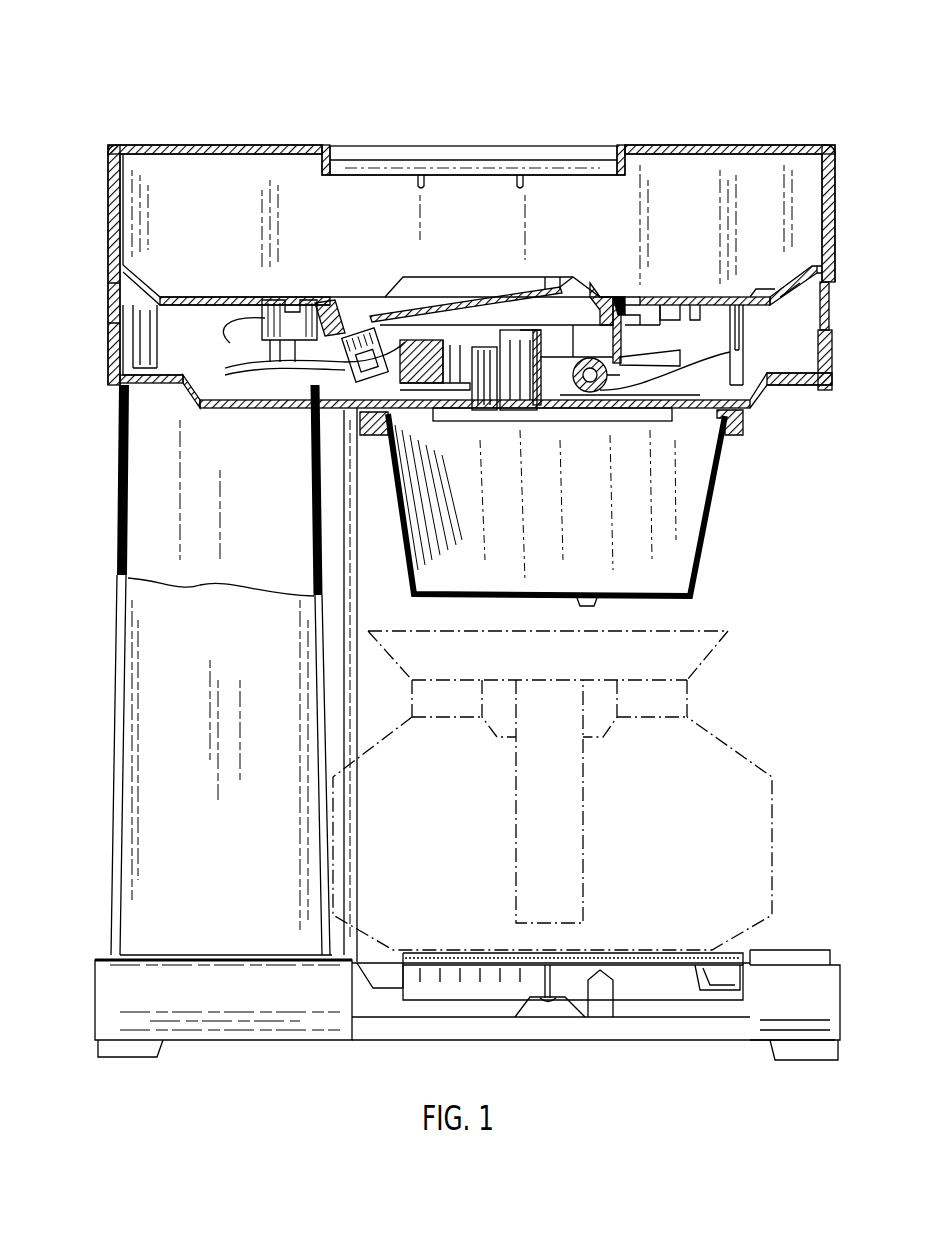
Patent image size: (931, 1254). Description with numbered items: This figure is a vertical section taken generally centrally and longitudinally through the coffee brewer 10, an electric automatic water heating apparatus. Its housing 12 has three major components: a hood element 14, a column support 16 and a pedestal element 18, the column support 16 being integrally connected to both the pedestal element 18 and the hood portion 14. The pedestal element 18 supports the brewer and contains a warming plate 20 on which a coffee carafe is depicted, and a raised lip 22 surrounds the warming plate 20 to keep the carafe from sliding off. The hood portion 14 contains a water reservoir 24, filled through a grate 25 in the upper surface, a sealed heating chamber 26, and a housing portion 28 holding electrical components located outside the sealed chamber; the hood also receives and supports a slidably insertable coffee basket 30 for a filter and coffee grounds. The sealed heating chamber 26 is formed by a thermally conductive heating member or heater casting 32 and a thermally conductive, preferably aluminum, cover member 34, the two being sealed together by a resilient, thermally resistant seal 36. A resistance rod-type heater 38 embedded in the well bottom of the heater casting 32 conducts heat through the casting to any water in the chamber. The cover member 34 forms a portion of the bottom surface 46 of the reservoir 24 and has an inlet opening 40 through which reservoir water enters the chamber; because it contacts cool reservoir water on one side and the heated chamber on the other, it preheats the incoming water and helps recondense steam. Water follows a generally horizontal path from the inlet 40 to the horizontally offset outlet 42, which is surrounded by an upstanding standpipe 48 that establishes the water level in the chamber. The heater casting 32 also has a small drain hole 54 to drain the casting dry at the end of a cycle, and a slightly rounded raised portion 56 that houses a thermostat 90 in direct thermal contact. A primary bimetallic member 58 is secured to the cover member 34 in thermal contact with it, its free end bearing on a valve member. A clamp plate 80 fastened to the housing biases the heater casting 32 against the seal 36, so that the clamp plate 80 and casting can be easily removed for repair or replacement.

The coffee brewer 10 is at (522, 96).
The housing 12 is at (104, 221).
The hood element 14 is at (836, 232).
The column support 16 is at (108, 768).
The pedestal element 18 is at (385, 1042).
The warming plate 20 is at (660, 978).
The raised lip 22 is at (795, 950).
The water reservoir 24 is at (457, 229).
The grate 25 is at (372, 168).
The sealed heating chamber 26 is at (522, 269).
The housing portion 28 is at (787, 343).
The coffee basket 30 is at (708, 505).
The heating member 32 is at (628, 320).
The cover member 34 is at (583, 286).
The seal 36 is at (620, 298).
The resistance rod-type heater 38 is at (598, 409).
The inlet opening 40 is at (368, 288).
The outlet 42 is at (512, 387).
The bottom surface 46 is at (752, 294).
The standpipe 48 is at (541, 335).
The drain hole 54 is at (483, 393).
The raised portion 56 is at (404, 342).
The primary bimetallic member 58 is at (452, 297).
The clamp plate 80 is at (612, 388).
The thermostat 90 is at (350, 385).